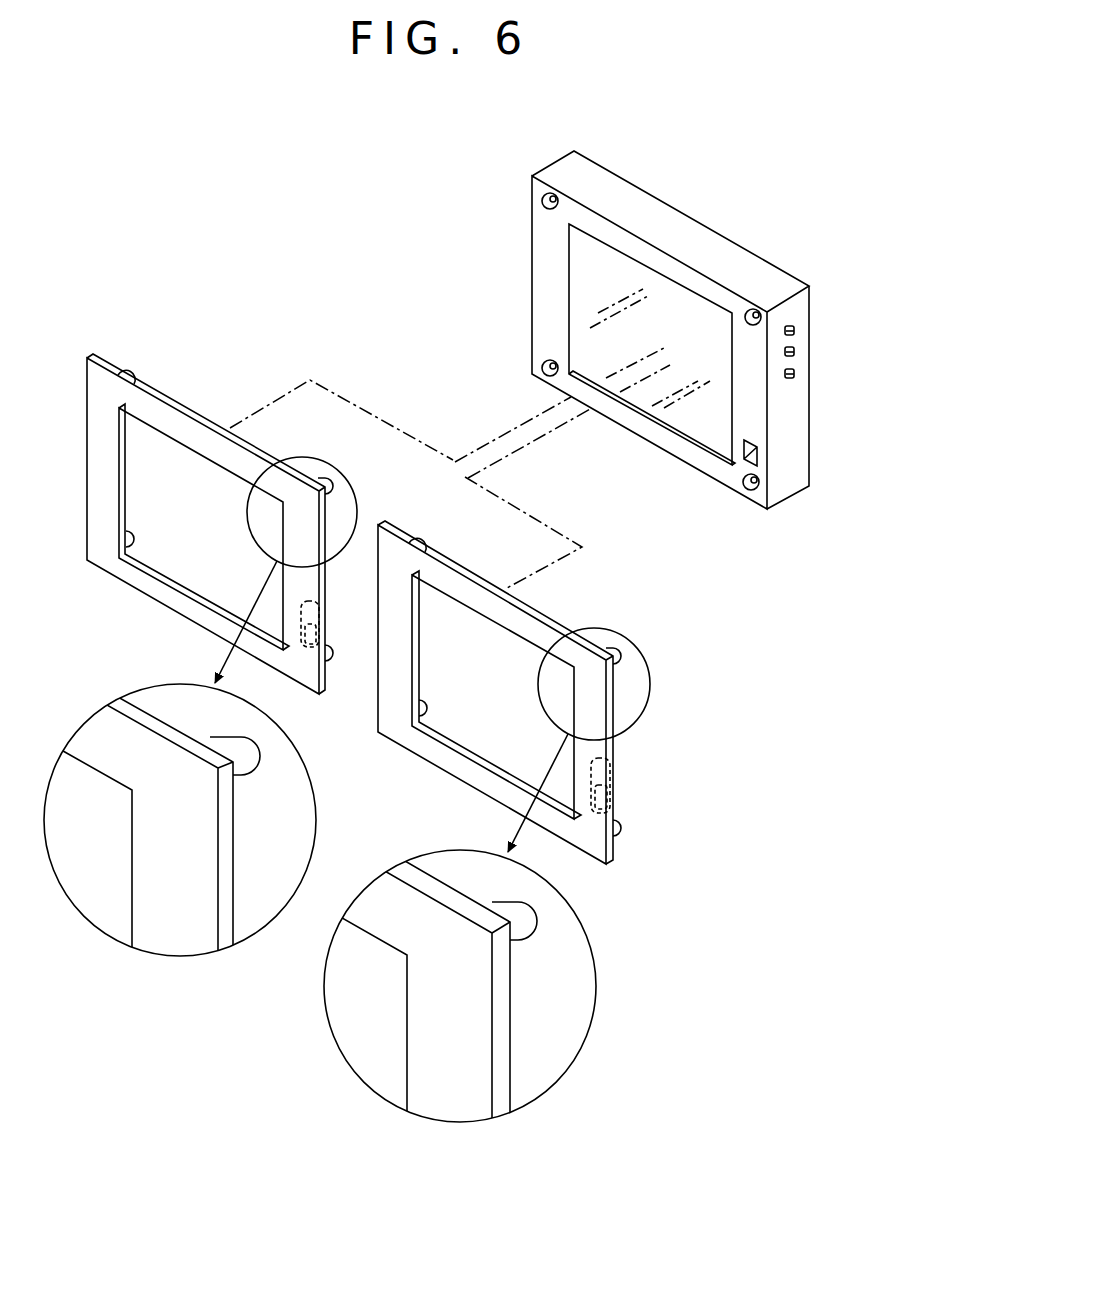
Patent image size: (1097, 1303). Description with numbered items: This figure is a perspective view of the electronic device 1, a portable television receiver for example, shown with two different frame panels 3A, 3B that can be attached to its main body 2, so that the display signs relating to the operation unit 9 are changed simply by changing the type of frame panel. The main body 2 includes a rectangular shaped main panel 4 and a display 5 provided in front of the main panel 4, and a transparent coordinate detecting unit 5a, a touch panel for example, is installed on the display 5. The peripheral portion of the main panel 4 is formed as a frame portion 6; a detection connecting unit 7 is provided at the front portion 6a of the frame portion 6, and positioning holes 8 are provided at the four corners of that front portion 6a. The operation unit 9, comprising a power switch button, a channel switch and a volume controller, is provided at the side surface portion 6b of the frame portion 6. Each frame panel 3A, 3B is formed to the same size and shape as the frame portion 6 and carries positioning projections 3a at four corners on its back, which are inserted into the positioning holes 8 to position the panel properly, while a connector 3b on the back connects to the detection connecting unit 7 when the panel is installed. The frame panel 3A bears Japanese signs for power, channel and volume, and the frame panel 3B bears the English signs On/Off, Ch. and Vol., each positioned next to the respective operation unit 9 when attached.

The electronic device 1 is at (208, 216).
The main body 2 is at (664, 215).
The frame panel 3A is at (148, 583).
The frame panel 3B is at (437, 753).
The positioning projections 3a is at (123, 365).
The connector 3b is at (319, 592).
The main panel 4 is at (693, 234).
The display 5 is at (596, 312).
The transparent coordinate detecting unit 5a is at (583, 343).
The frame portion 6 is at (552, 261).
The front portion 6a is at (552, 286).
The side surface portion 6b is at (786, 482).
The detection connecting unit 7 is at (759, 447).
The positioning holes 8 is at (551, 193).
The operation unit 9 is at (797, 330).